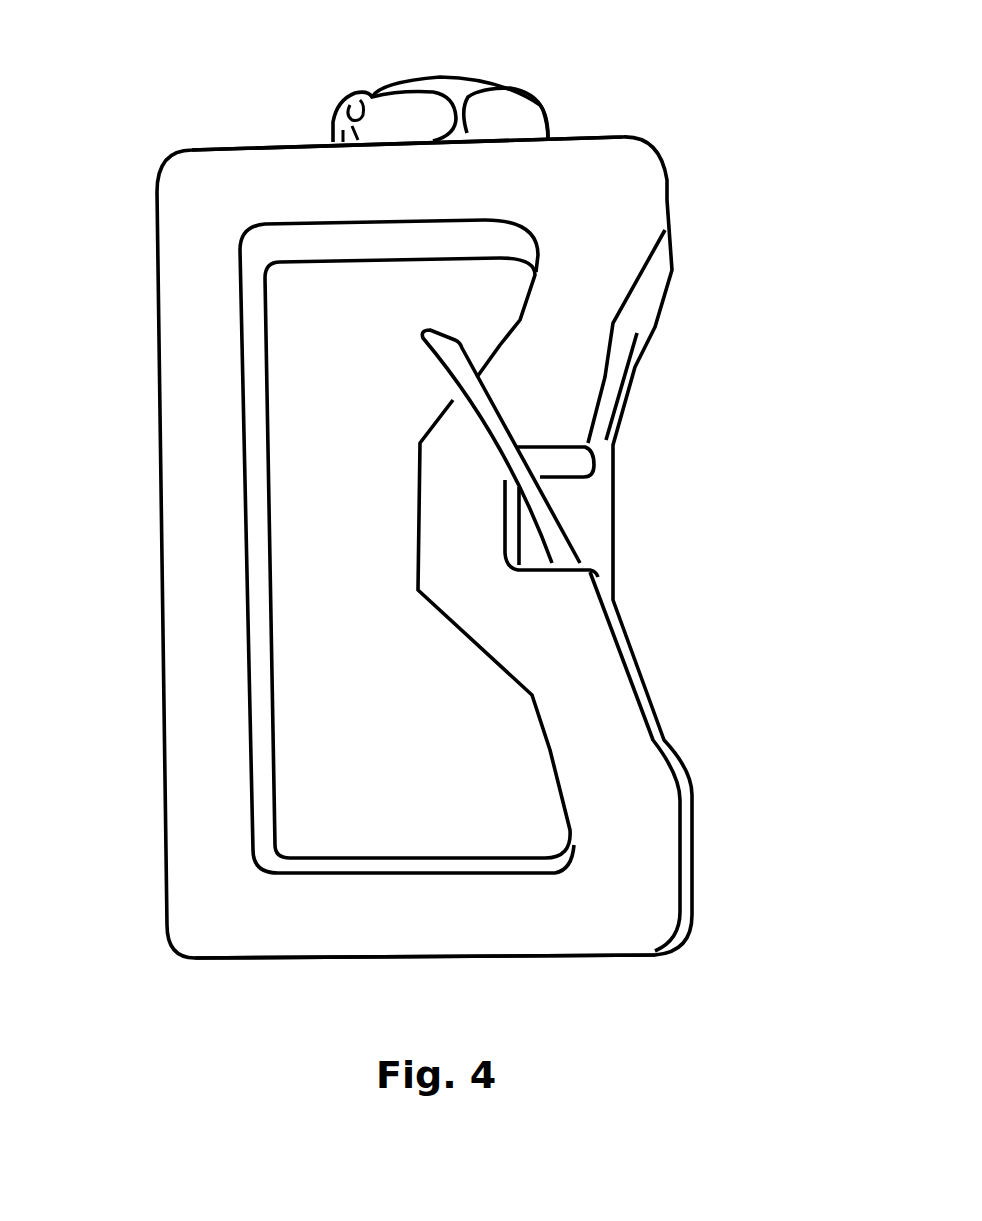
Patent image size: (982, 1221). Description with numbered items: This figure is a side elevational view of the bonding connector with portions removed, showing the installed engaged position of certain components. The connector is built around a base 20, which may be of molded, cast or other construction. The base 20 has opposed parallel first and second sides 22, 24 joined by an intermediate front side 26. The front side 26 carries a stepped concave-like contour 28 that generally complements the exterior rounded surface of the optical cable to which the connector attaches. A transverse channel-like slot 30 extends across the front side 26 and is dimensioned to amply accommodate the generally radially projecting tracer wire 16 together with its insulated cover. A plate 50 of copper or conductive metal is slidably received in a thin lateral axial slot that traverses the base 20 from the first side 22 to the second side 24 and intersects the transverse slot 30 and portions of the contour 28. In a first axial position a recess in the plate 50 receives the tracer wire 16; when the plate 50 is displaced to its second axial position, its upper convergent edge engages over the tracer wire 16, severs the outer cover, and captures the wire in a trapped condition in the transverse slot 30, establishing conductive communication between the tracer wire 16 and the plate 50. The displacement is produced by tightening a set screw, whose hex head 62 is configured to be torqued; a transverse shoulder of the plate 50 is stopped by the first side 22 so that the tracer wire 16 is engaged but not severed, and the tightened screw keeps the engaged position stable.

The base 20 is at (148, 534).
The first side 22 is at (245, 147).
The second side 24 is at (561, 958).
The front side 26 is at (657, 690).
The stepped concave-like contour 28 is at (617, 356).
The transverse channel-like slot 30 is at (545, 467).
The plate 50 is at (585, 517).
The tracer wire 16 is at (560, 560).
The hex head 62 is at (403, 115).